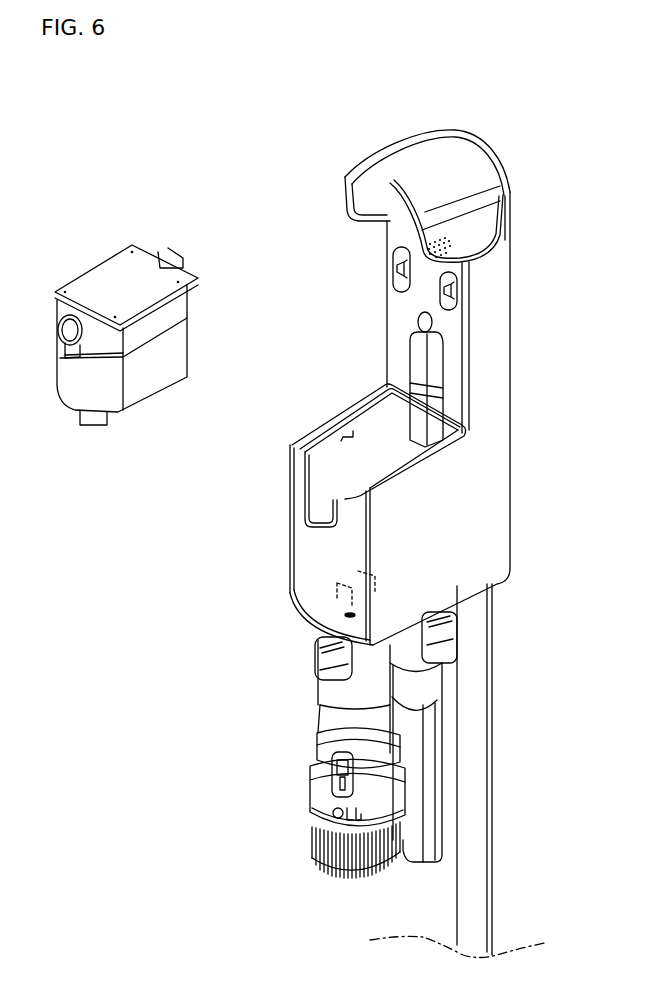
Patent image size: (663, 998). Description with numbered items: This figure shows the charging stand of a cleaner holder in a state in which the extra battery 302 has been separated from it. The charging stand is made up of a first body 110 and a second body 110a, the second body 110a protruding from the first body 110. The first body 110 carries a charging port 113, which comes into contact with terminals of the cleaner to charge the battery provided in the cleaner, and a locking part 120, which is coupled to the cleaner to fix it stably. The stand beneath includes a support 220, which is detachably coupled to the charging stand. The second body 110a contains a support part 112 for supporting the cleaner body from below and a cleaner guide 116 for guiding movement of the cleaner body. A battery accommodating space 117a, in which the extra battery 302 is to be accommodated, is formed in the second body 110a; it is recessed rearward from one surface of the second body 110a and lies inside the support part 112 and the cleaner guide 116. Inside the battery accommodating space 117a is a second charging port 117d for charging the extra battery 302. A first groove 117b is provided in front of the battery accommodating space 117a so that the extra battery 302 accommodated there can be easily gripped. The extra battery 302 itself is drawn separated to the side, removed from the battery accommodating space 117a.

The first body 110 is at (497, 293).
The second body 110a is at (312, 557).
The support part 112 is at (433, 362).
The charging port 113 is at (395, 267).
The cleaner guide 116 is at (315, 457).
The battery accommodating space 117a is at (352, 433).
The first groove 117b is at (310, 510).
The charging port 117d is at (333, 595).
The locking part 120 is at (414, 152).
The support 220 is at (475, 812).
The extra battery 302 is at (112, 282).